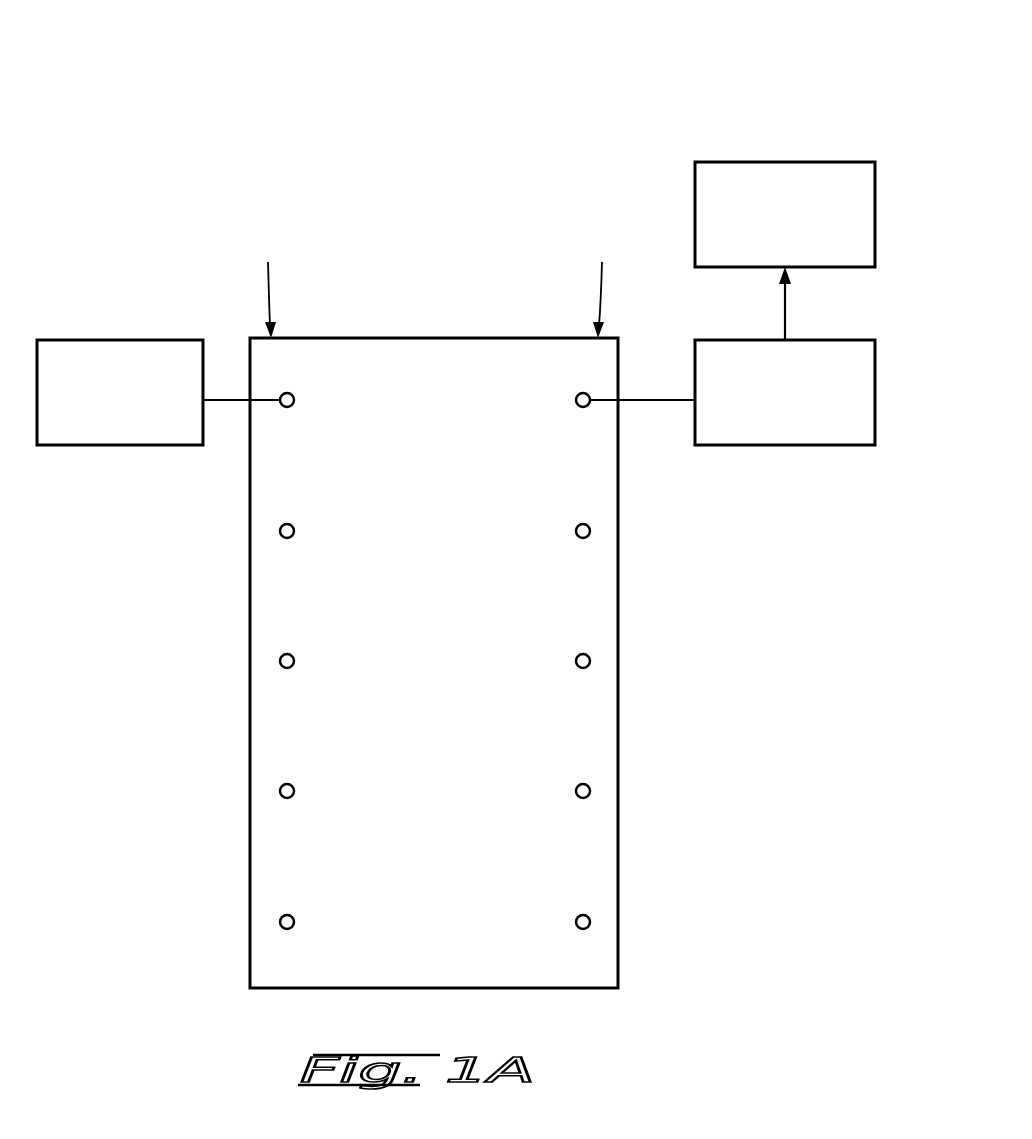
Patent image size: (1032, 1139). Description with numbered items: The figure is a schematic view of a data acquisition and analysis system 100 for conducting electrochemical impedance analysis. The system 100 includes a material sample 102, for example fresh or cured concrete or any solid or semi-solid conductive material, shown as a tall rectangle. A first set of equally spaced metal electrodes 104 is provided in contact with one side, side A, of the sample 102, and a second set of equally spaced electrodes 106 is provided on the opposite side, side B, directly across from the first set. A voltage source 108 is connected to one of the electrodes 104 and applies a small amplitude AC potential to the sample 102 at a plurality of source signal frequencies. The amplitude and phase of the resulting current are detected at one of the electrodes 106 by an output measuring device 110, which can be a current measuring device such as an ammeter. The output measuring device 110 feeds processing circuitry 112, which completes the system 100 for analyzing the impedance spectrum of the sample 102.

The data acquisition and analysis system 100 is at (548, 122).
The material sample 102 is at (417, 338).
The plurality of electrodes 104 is at (325, 390).
The plurality of electrodes 106 is at (546, 390).
The voltage source 108 is at (108, 340).
The output measuring device 110 is at (843, 340).
The processing circuitry 112 is at (793, 162).